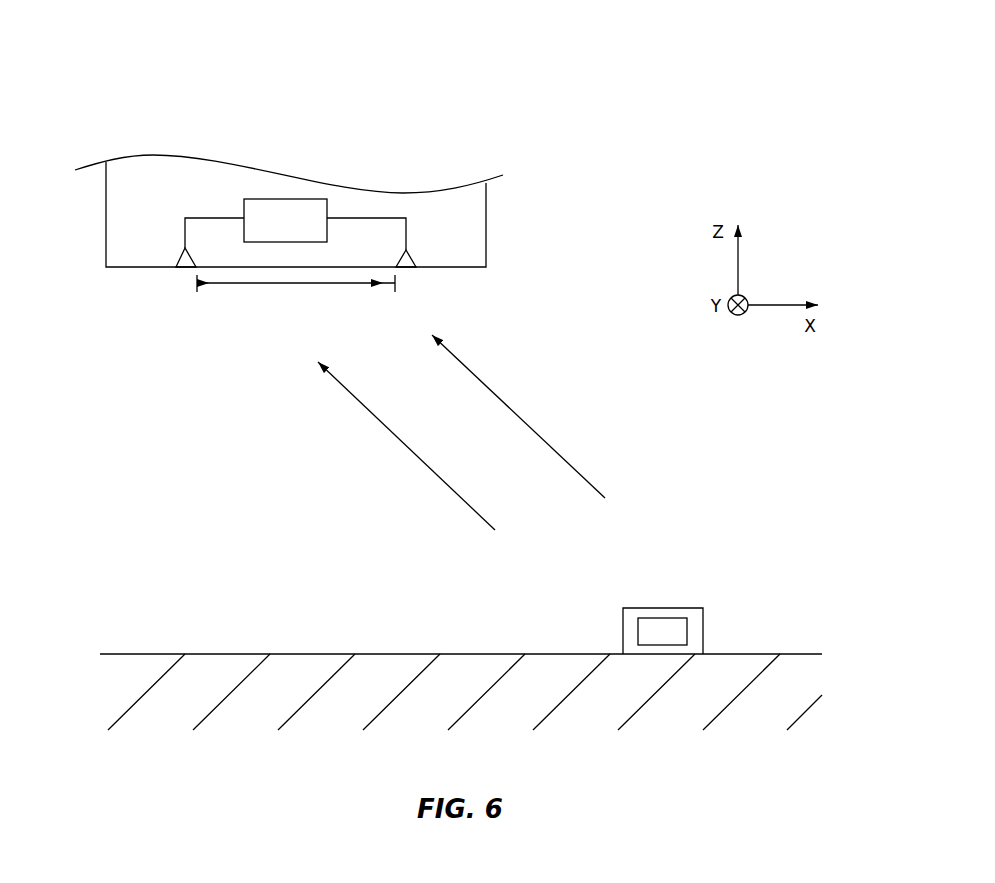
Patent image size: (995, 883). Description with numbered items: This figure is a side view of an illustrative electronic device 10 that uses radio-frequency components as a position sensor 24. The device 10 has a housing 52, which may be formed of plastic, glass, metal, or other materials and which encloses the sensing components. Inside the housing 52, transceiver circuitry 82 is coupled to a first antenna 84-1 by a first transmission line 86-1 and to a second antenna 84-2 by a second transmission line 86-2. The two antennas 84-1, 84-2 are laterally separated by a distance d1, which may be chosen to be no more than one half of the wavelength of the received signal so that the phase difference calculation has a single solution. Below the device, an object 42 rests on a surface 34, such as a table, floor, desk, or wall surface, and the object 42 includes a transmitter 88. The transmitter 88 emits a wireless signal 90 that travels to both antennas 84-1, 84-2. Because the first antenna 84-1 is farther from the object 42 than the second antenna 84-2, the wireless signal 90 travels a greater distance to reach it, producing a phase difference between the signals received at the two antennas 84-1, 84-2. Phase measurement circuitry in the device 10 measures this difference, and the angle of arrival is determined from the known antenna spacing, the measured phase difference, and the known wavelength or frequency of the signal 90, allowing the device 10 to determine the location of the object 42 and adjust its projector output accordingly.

The electronic device 10 is at (419, 100).
The position sensor 24 is at (186, 197).
The housing 52 is at (477, 237).
The transceiver circuitry 82 is at (284, 198).
The first transmission line 86-1 is at (205, 218).
The second transmission line 86-2 is at (366, 218).
The first antenna 84-1 is at (185, 270).
The second antenna 84-2 is at (410, 256).
The wireless signal 90 is at (415, 458).
The surface 34 is at (733, 666).
The object 42 is at (688, 608).
The transmitter 88 is at (645, 618).